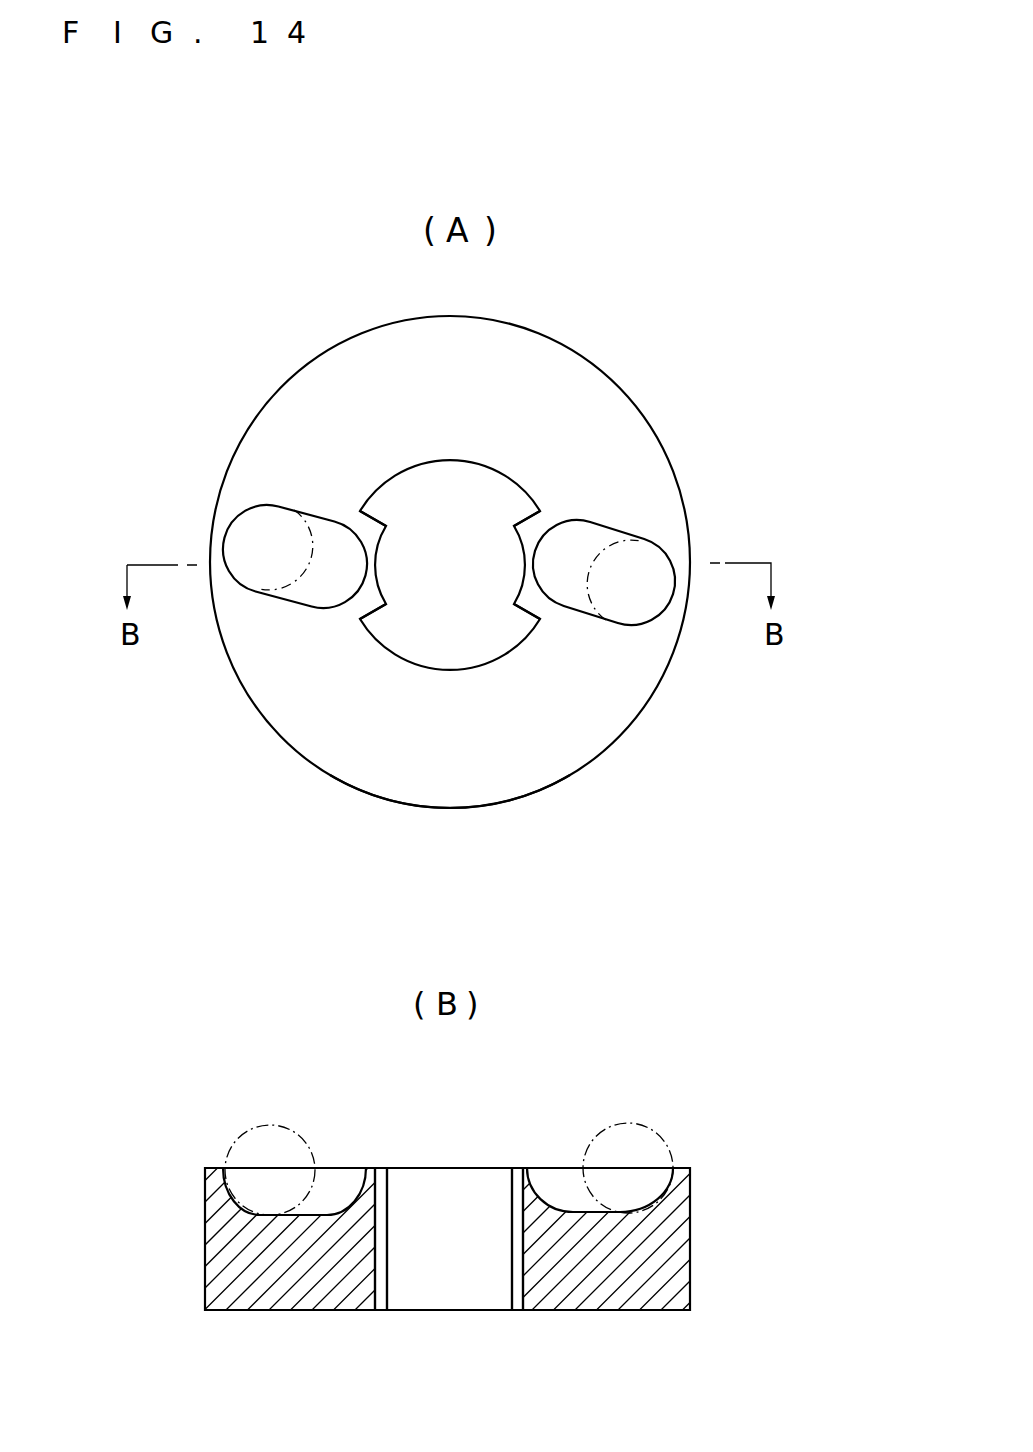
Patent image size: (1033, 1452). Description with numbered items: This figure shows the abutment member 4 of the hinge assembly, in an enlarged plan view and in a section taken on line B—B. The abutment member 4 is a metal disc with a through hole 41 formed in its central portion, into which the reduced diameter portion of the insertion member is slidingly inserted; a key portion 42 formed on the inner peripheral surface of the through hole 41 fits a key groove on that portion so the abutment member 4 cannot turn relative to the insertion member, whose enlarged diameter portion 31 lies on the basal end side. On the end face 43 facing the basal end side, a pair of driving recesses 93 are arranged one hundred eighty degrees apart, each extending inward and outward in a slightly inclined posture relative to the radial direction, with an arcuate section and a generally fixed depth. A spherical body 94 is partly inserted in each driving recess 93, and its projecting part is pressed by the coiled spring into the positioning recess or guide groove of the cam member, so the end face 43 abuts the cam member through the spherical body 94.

The abutment member 4 is at (597, 367).
The through hole 41 is at (416, 471).
The key portion 42 is at (391, 594).
The end face 43 is at (527, 765).
The driving recess 93 is at (337, 545).
The spherical body 94 is at (238, 1136).
The enlarged diameter portion 31 is at (455, 1218).